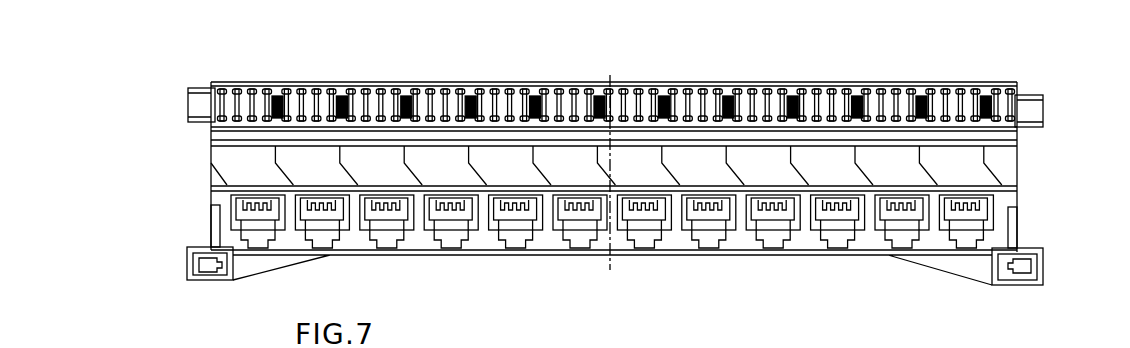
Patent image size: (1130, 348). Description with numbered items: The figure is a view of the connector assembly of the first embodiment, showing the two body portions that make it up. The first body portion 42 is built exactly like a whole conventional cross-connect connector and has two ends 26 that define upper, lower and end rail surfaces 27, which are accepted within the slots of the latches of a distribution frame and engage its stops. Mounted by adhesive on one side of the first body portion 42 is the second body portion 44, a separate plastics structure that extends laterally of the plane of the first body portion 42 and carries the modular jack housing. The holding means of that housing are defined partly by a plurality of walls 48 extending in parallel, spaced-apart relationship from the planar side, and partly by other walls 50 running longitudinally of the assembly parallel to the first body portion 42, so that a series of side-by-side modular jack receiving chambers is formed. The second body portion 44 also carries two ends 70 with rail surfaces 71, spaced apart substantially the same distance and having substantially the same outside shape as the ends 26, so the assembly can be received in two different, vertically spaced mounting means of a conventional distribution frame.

The ends 26 is at (189, 100).
The rail surfaces 27 is at (195, 88).
The first body portion 42 is at (438, 80).
The second body portion 44 is at (201, 166).
The walls 48 is at (687, 251).
The walls 50 is at (211, 193).
The ends 70 is at (187, 271).
The rail surfaces 71 is at (187, 247).